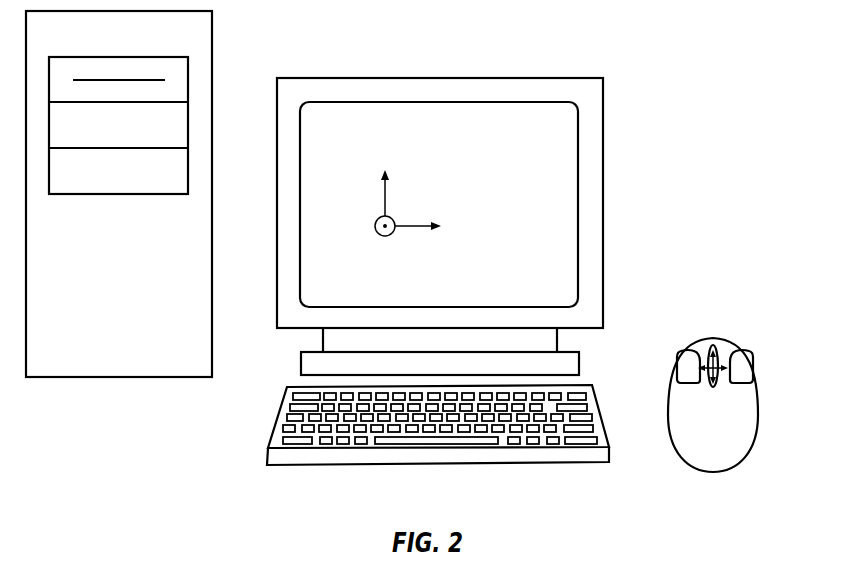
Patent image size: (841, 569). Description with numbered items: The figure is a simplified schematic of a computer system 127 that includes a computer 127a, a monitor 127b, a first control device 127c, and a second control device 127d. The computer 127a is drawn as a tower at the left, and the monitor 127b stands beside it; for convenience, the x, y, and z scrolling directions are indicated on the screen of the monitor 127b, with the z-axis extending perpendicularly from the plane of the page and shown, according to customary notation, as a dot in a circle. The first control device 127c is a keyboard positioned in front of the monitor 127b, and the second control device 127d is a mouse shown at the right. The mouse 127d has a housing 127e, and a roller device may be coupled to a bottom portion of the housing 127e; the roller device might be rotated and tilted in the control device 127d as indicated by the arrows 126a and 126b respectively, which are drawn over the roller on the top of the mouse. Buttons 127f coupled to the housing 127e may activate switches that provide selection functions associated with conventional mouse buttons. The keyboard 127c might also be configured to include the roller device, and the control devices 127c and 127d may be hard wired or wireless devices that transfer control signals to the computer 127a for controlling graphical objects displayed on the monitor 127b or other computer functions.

The computer system 127 is at (731, 70).
The computer 127a is at (140, 323).
The monitor 127b is at (557, 148).
The first control device 127c is at (271, 423).
The second control device 127d is at (715, 472).
The housing 127e is at (753, 408).
The buttons 127f is at (741, 338).
The arrow indicating rotation of roller device 126a is at (707, 380).
The arrow indicating tilting of roller device 126b is at (718, 362).